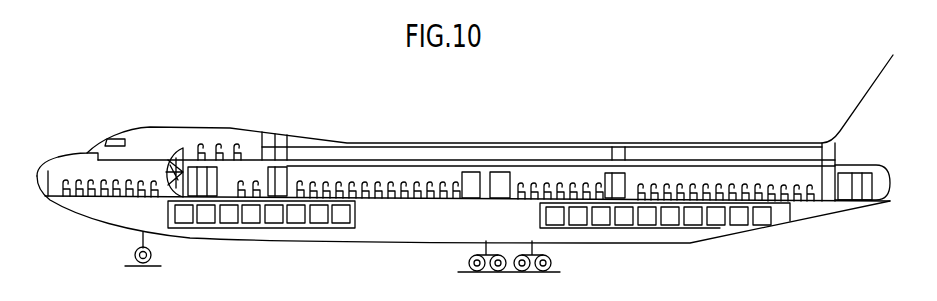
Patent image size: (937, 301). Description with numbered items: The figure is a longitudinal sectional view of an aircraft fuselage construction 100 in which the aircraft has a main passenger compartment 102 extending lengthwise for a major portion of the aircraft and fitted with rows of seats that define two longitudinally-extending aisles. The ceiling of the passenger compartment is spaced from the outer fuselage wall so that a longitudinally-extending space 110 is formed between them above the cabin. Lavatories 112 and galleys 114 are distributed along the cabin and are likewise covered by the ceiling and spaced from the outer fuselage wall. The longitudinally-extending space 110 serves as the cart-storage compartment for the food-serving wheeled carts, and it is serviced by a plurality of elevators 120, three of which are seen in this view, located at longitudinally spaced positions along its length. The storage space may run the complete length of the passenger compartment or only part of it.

The aircraft fuselage construction 100 is at (350, 130).
The main passenger compartment 102 is at (407, 172).
The longitudinally-extending space 110 is at (575, 157).
The lavatories 112 is at (210, 168).
The galleys 114 is at (178, 166).
The elevators 120 is at (290, 205).